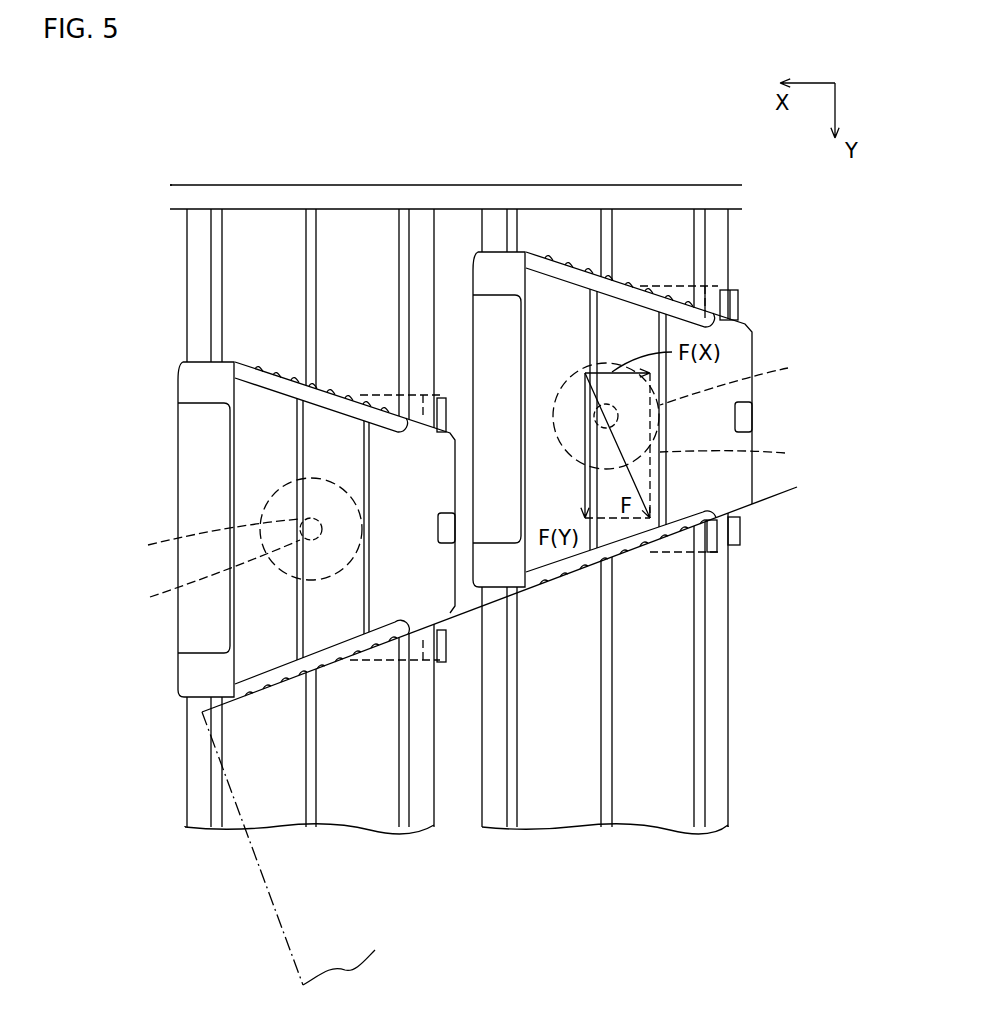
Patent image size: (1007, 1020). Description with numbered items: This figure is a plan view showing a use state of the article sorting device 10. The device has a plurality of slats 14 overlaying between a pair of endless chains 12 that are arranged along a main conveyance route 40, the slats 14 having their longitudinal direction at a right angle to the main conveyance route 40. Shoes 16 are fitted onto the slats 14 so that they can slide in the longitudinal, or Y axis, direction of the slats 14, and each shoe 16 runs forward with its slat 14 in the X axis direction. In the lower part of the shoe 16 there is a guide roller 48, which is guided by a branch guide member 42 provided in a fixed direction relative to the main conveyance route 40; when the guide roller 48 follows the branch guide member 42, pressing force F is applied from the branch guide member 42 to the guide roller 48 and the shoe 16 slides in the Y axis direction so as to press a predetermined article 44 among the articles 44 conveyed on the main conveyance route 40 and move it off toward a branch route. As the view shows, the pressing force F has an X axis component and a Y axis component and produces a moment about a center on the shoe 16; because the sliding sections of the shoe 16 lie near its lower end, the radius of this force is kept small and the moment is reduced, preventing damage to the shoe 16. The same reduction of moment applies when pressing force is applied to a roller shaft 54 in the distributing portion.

The article sorting device 10 is at (358, 184).
The endless chains 12 is at (718, 193).
The slats 14 is at (436, 808).
The shoe 16 is at (173, 368).
The main conveyance route 40 is at (121, 243).
The branch guide member 42 is at (757, 297).
The article 44 is at (270, 898).
The guide roller 48 is at (465, 480).
The roller shaft 54 is at (240, 580).